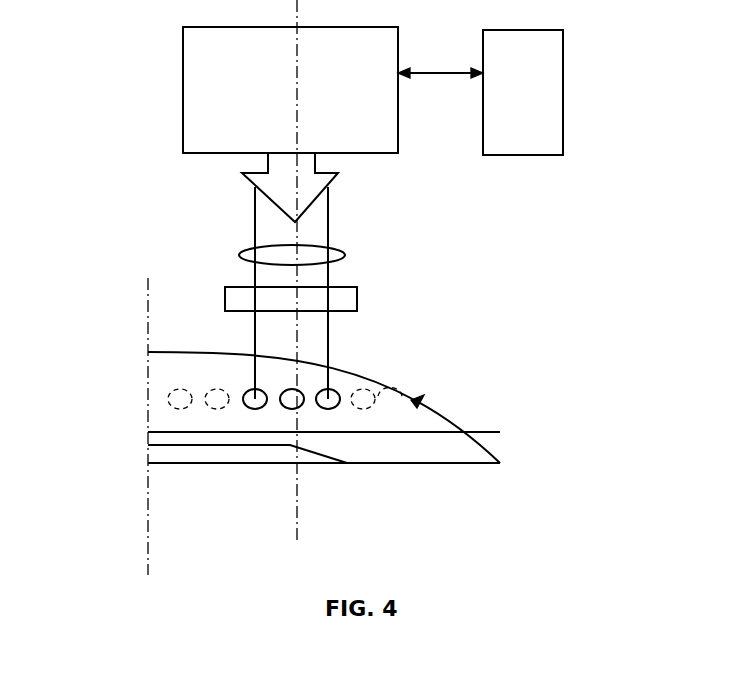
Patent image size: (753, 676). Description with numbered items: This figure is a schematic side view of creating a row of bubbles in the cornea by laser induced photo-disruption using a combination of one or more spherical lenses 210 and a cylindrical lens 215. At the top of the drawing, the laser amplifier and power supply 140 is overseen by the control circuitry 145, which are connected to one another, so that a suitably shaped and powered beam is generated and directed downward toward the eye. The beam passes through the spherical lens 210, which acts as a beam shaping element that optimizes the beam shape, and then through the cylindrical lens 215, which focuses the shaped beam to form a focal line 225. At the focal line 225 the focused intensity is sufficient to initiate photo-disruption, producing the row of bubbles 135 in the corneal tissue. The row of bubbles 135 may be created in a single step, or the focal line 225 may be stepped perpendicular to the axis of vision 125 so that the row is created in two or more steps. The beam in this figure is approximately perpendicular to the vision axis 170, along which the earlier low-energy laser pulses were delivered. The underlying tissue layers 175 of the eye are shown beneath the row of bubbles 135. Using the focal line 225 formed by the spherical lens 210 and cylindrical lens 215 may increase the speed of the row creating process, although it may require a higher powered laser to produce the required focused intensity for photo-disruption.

The laser amplifier and power supply 140 is at (185, 60).
The control circuitry 145 is at (563, 80).
The spherical lens 210 is at (243, 250).
The cylindrical lens 215 is at (357, 300).
The axis of vision 125 is at (152, 302).
The row of bubbles 135 is at (428, 406).
The focal line 225 is at (411, 400).
The substrate layers 175 is at (500, 463).
The vision axis 170 is at (300, 515).